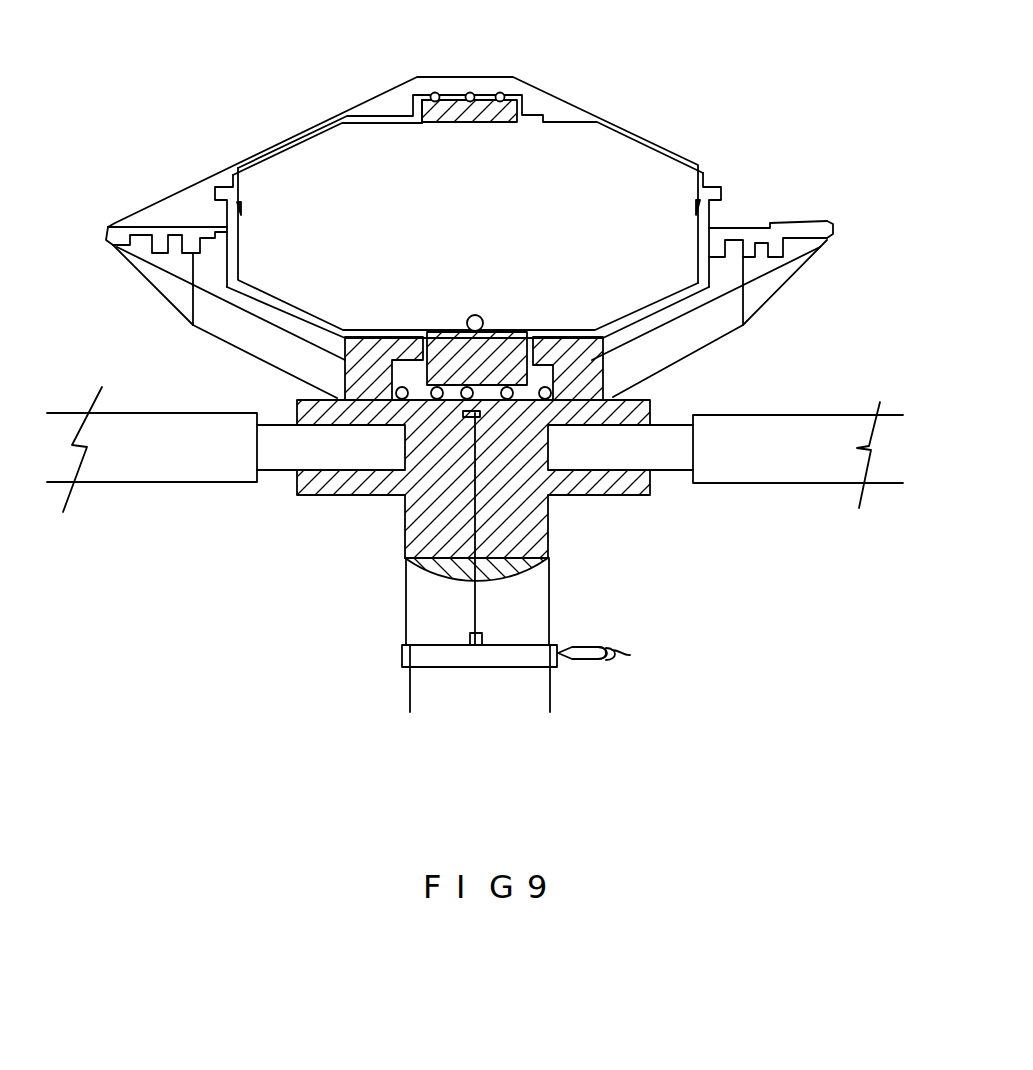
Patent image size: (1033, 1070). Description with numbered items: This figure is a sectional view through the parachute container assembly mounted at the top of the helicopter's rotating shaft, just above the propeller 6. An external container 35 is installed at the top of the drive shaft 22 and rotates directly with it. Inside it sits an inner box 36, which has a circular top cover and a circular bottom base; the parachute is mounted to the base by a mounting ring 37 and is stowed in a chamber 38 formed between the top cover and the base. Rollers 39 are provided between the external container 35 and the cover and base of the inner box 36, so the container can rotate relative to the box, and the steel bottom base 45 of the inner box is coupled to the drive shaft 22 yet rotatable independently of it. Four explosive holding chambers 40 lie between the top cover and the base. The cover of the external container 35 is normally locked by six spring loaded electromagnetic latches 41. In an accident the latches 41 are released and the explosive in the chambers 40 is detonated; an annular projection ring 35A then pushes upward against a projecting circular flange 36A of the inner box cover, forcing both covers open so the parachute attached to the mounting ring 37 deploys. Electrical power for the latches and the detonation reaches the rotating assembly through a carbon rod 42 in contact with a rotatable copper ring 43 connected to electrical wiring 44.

The propeller 6 is at (163, 450).
The drive shaft 22 is at (442, 692).
The external container 35 is at (840, 278).
The annular projection ring 35A is at (717, 217).
The inner box 36 is at (348, 332).
The projecting circular flange 36A is at (222, 192).
The mounting ring 37 is at (481, 316).
The chamber 38 is at (380, 200).
The rollers 39 is at (467, 93).
The explosive holding chambers 40 is at (183, 233).
The spring loaded electromagnetic latches 41 is at (137, 243).
The carbon rod 42 is at (592, 535).
The rotatable copper ring 43 is at (561, 675).
The electrical wiring 44 is at (668, 368).
The steel bottom base 45 is at (442, 350).